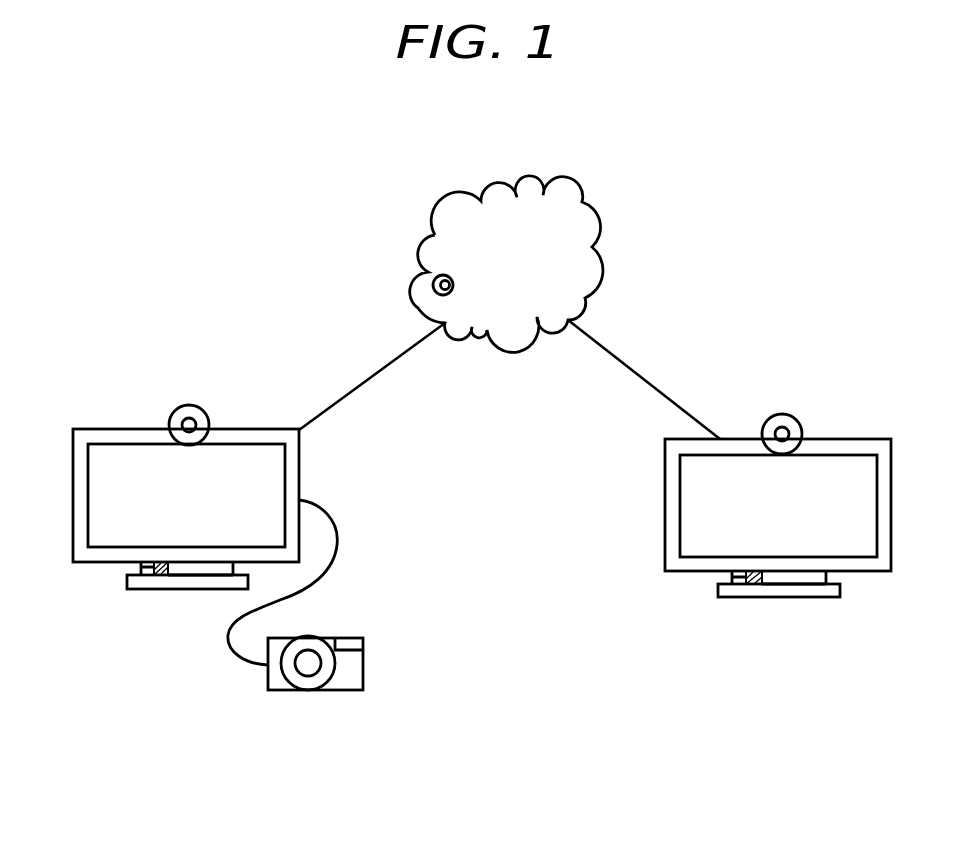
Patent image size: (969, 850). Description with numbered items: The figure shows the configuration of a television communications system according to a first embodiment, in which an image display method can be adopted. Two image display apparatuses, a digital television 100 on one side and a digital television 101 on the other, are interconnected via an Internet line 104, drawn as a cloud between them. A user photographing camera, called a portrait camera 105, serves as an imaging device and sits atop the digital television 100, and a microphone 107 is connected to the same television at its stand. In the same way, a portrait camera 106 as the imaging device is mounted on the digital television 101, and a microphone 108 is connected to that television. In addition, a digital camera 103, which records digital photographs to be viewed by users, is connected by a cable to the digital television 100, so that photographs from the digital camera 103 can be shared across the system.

The digital television 100 is at (180, 590).
The digital television 101 is at (773, 597).
The digital camera 103 is at (310, 690).
The Internet line 104 is at (473, 328).
The portrait camera 105 is at (191, 405).
The portrait camera 106 is at (783, 414).
The microphone 107 is at (140, 567).
The microphone 108 is at (732, 577).